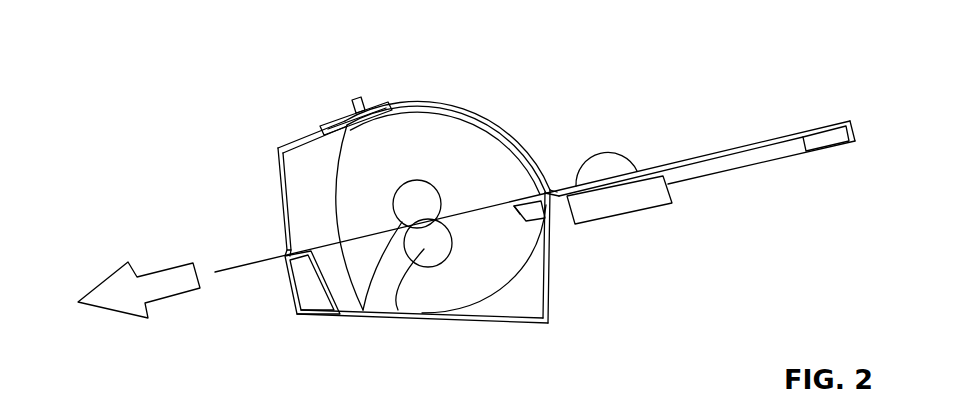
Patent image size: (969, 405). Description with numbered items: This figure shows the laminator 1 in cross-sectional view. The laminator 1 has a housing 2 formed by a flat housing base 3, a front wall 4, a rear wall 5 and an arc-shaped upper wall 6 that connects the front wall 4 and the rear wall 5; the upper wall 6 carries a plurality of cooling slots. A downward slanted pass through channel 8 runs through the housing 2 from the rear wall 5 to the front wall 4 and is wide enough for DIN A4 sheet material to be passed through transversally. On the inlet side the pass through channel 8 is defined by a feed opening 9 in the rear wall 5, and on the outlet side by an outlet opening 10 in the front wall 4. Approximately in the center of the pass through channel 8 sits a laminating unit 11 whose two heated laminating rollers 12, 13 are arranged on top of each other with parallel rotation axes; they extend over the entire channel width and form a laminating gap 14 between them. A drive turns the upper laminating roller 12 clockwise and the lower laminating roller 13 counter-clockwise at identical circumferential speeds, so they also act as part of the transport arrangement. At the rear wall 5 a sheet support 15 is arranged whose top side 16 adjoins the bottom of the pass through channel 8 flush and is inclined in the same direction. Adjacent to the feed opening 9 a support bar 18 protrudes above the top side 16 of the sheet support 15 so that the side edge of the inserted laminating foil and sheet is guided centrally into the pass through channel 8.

The laminator 1 is at (551, 86).
The housing 2 is at (277, 146).
The housing base 3 is at (443, 318).
The front wall 4 is at (282, 191).
The rear wall 5 is at (553, 258).
The upper wall 6 is at (471, 105).
The pass through channel 8 is at (515, 210).
The feed opening 9 is at (555, 185).
The outlet opening 10 is at (288, 252).
The laminating unit 11 is at (405, 176).
The upper laminating roller 12 is at (398, 203).
The lower laminating roller 13 is at (398, 310).
The laminating gap 14 is at (363, 310).
The sheet support 15 is at (735, 172).
The top side 16 is at (758, 138).
The support bar 18 is at (613, 156).